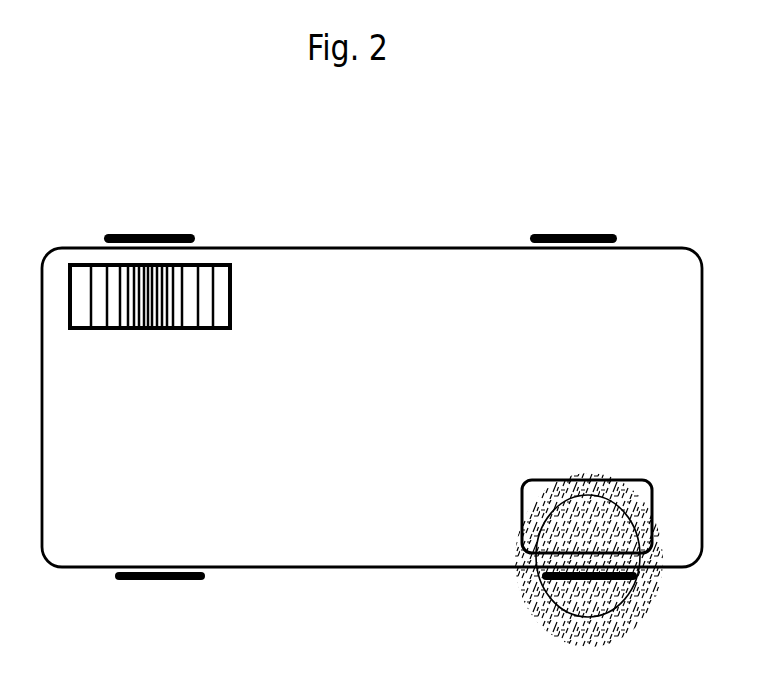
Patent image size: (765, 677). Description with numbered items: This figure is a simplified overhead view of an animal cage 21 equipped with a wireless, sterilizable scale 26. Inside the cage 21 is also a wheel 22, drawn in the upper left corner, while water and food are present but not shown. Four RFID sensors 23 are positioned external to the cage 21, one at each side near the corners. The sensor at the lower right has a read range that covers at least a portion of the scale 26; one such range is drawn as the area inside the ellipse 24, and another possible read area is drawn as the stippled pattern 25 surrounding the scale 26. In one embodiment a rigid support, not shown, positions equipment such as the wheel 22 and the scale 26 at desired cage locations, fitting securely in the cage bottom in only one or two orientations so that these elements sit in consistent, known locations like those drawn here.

The cage 21 is at (353, 285).
The wheel 22 is at (205, 320).
The RFID sensors 23 is at (162, 580).
The ellipse 24 is at (623, 603).
The pattern 25 is at (543, 620).
The wireless, sterilizable scale 26 is at (537, 488).